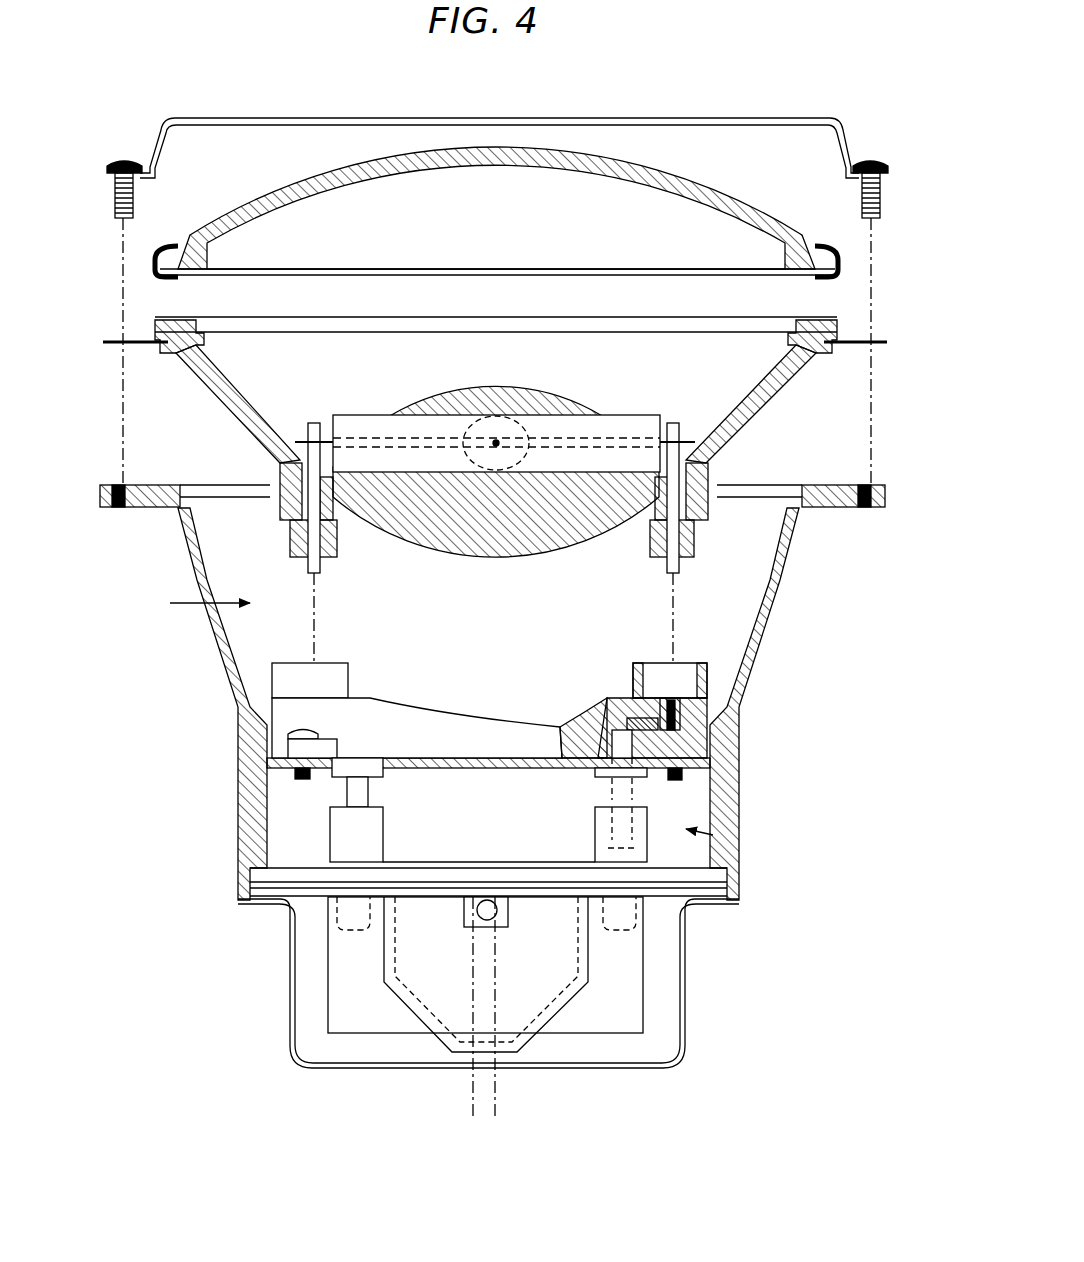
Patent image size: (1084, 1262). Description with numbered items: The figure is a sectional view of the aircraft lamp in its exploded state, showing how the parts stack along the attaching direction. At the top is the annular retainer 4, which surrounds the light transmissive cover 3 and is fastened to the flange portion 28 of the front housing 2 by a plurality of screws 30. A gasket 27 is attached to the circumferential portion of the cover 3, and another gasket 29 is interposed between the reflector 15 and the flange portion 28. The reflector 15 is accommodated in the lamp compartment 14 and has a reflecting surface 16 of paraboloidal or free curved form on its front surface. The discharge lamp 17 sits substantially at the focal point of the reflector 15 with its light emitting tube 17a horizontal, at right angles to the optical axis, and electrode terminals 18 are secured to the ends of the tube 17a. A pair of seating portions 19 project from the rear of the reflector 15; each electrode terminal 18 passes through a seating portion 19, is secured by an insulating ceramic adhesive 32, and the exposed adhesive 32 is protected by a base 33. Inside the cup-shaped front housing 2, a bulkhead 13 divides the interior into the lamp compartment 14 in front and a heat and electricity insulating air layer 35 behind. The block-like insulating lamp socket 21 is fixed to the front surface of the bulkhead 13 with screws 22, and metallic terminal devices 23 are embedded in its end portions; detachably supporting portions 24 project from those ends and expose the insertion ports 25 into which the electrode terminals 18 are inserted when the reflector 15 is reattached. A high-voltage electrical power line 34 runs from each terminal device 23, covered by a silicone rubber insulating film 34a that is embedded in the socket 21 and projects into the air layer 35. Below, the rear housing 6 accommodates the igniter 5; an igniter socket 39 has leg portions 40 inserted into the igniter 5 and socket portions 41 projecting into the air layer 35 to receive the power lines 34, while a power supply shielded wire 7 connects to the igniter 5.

The front housing 2 is at (208, 638).
The light transmissive cover 3 is at (502, 147).
The retainer 4 is at (162, 119).
The igniter 5 is at (362, 1035).
The rear housing 6 is at (288, 985).
The power supply shielded wire 7 is at (500, 1090).
The bulkhead 13 is at (486, 757).
The lamp compartment 14 is at (189, 604).
The reflector 15 is at (240, 425).
The reflecting surface 16 is at (758, 372).
The discharge lamp 17 is at (490, 412).
The light emitting tube 17a is at (600, 436).
The electrode terminals 18 is at (308, 565).
The seating portions 19 is at (280, 508).
The lamp socket 21 is at (572, 727).
The screws 22 is at (300, 782).
The metallic terminal devices 23 is at (700, 745).
The detachably supporting portions 24 is at (272, 680).
The insertion ports 25 is at (666, 700).
The gasket 27 is at (830, 248).
The flange portion 28 is at (838, 510).
The gasket 29 is at (846, 346).
The screws 30 is at (871, 160).
The insulating ceramic adhesive 32 is at (333, 505).
The base 33 is at (340, 553).
The high-voltage electrical power line 34 is at (630, 718).
The insulating film 34a is at (366, 790).
The heat and electricity insulating air layer 35 is at (737, 836).
The igniter socket 39 is at (488, 865).
The leg portions 40 is at (325, 912).
The socket portions 41 is at (380, 830).